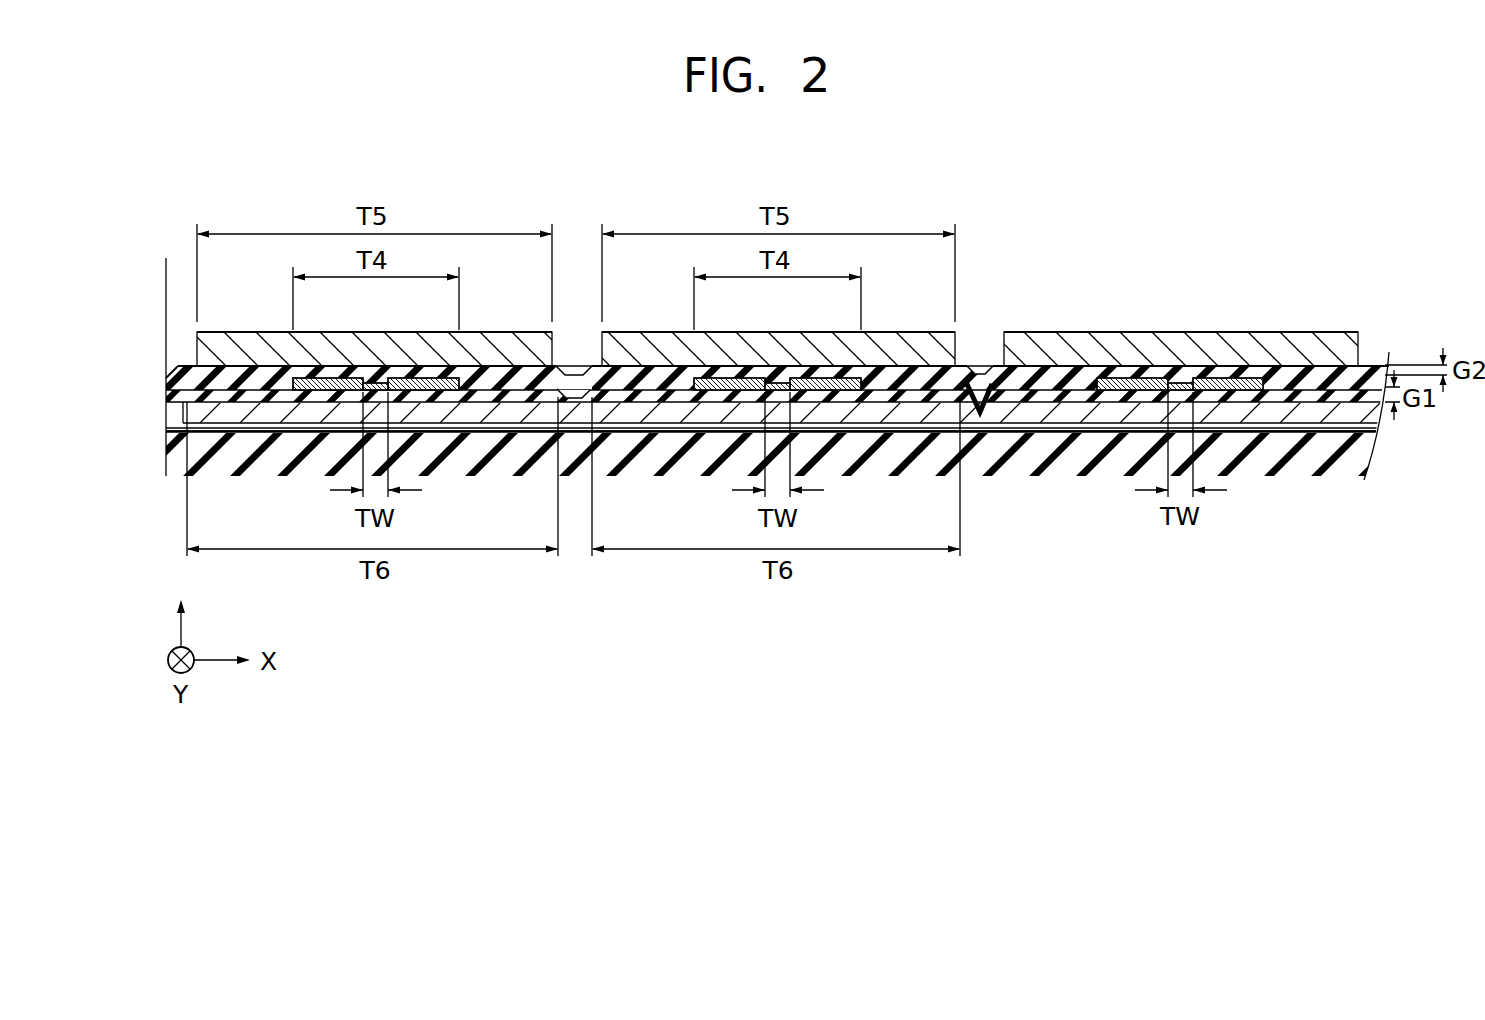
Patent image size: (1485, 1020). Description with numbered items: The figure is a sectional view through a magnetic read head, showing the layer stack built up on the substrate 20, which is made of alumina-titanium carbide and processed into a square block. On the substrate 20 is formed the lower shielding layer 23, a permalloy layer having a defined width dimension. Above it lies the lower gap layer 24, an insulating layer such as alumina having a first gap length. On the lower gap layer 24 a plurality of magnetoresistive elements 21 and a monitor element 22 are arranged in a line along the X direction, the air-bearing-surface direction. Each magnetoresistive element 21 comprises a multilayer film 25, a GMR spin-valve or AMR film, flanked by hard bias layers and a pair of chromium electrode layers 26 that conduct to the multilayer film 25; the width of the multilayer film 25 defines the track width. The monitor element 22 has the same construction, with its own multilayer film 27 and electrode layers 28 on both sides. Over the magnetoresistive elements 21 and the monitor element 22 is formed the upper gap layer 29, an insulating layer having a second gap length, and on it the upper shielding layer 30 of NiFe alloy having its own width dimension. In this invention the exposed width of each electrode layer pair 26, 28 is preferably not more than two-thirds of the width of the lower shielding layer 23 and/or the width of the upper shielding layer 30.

The substrate 20 is at (1338, 455).
The magnetoresistive element 21 is at (854, 360).
The monitor element 22 is at (450, 360).
The lower shielding layer 23 is at (500, 416).
The lower gap layer 24 is at (1325, 392).
The multilayer film 25 is at (780, 382).
The electrode layers 26 is at (718, 380).
The multilayer film 27 is at (378, 382).
The electrode layers 28 is at (313, 380).
The upper gap layer 29 is at (576, 372).
The upper shielding layer 30 is at (253, 340).